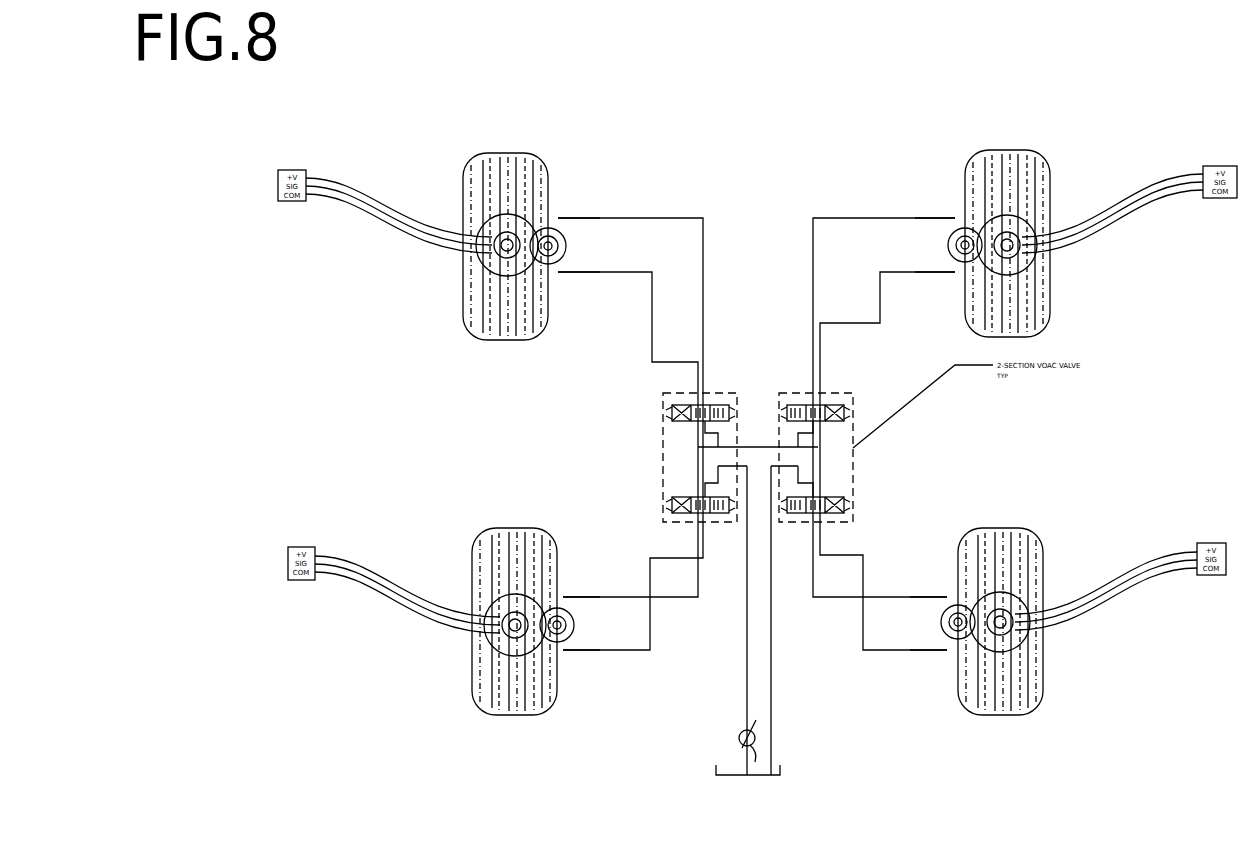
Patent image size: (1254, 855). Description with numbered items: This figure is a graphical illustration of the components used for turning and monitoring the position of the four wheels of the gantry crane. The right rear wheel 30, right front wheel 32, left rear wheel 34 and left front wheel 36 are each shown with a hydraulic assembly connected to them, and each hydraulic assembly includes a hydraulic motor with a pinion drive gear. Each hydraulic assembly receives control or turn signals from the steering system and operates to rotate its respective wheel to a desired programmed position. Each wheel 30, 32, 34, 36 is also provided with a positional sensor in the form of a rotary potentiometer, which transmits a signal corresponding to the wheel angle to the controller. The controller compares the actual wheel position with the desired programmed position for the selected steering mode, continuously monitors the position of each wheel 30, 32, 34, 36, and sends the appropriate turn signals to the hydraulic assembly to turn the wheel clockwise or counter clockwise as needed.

The right rear wheel 30 is at (1035, 707).
The right front wheel 32 is at (1045, 325).
The left rear wheel 34 is at (480, 703).
The left front wheel 36 is at (470, 328).